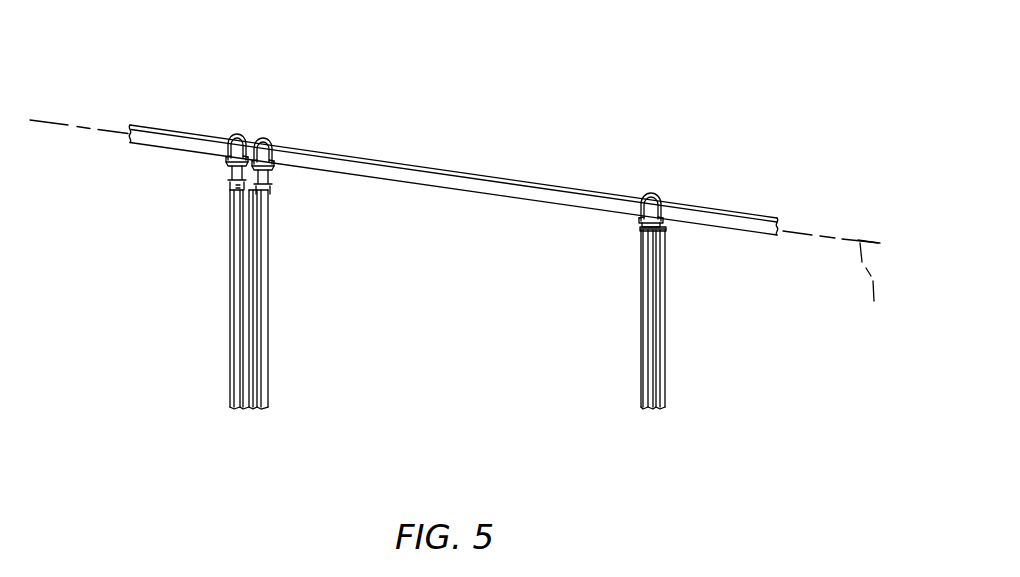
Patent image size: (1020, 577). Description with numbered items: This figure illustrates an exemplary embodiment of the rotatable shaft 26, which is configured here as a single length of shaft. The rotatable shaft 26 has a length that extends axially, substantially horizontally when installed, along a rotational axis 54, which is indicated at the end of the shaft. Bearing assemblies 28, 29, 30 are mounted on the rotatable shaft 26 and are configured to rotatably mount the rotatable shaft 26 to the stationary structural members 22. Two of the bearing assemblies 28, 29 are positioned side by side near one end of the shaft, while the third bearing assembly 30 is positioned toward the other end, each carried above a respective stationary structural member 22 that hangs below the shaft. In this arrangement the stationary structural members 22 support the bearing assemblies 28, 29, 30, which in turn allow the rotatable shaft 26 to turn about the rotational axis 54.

The stationary structural member 22 is at (270, 330).
The rotatable shaft 26 is at (173, 130).
The bearing assembly 28 is at (245, 127).
The bearing assembly 29 is at (285, 134).
The bearing assembly 30 is at (668, 183).
The rotational axis 54 is at (874, 284).